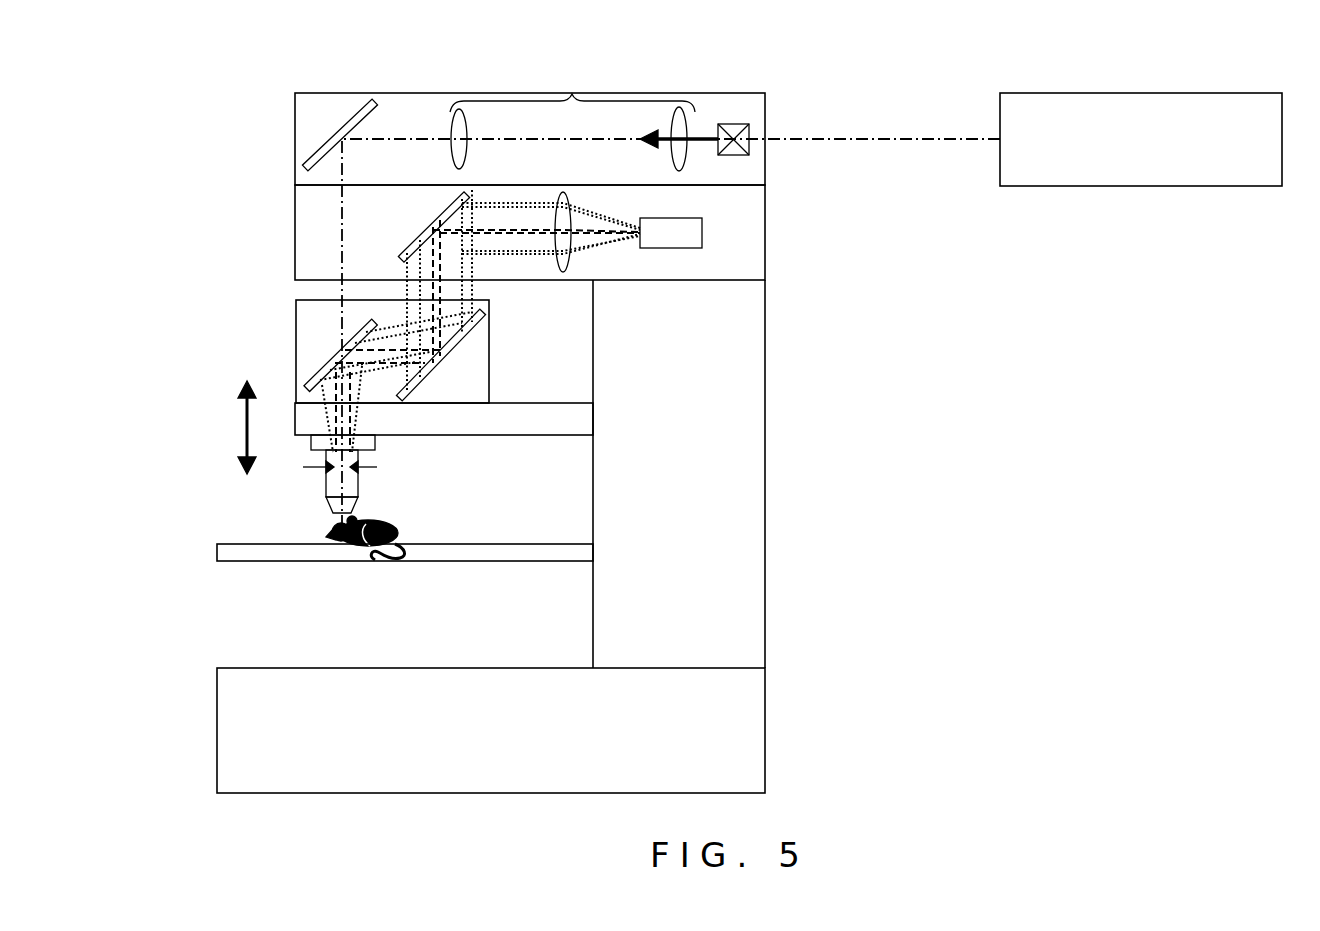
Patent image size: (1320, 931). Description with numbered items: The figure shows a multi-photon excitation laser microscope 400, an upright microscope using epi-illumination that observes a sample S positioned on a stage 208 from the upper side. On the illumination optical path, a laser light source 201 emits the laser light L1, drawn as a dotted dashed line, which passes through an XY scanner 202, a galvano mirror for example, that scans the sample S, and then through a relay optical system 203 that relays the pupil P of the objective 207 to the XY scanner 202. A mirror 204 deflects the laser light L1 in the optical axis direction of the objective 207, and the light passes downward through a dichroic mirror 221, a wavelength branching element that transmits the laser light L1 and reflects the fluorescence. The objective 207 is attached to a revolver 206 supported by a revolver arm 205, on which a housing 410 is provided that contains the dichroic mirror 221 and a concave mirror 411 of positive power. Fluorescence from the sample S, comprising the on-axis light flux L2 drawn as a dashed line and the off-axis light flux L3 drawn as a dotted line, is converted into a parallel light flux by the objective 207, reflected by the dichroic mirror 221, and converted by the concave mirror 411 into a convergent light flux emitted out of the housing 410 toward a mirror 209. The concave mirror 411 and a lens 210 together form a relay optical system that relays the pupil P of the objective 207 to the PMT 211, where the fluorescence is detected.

The laser light source 201 is at (1060, 93).
The XY scanner 202 is at (735, 124).
The relay optical system 203 is at (572, 117).
The mirror 204 is at (357, 110).
The revolver arm 205 is at (296, 424).
The revolver 206 is at (313, 442).
The objective 207 is at (328, 498).
The stage 208 is at (216, 548).
The mirror 209 is at (440, 228).
The lens 210 is at (563, 273).
The PMT 211 is at (703, 233).
The dichroic mirror 221 is at (322, 372).
The multi-photon excitation laser microscope 400 is at (1280, 76).
The housing 410 is at (296, 320).
The concave mirror 411 is at (468, 345).
The laser light L1 is at (847, 140).
The on-axis light flux L2 is at (381, 347).
The off-axis light flux L3 is at (462, 290).
The pupil P is at (377, 466).
The sample S is at (398, 522).